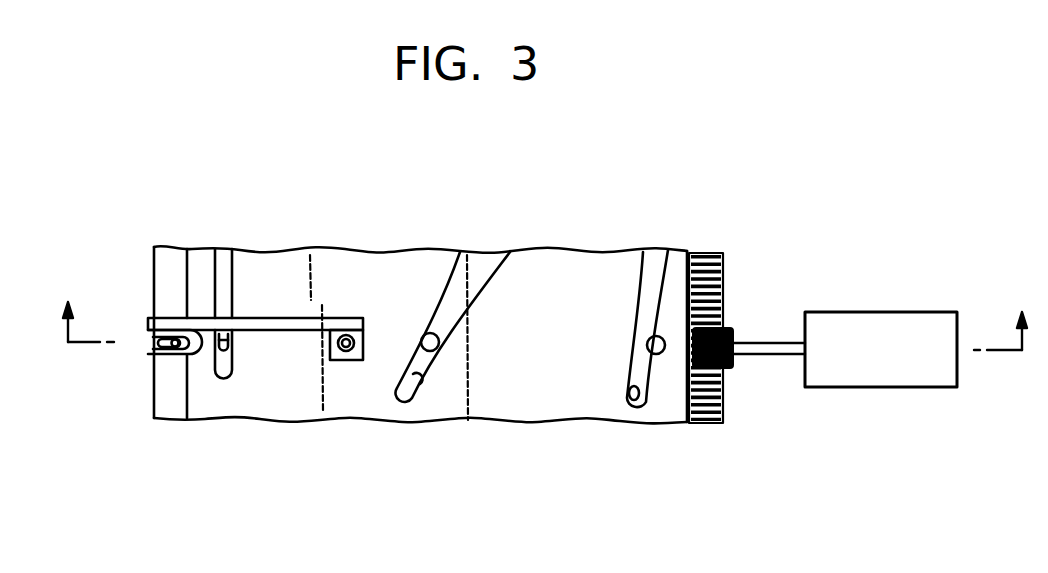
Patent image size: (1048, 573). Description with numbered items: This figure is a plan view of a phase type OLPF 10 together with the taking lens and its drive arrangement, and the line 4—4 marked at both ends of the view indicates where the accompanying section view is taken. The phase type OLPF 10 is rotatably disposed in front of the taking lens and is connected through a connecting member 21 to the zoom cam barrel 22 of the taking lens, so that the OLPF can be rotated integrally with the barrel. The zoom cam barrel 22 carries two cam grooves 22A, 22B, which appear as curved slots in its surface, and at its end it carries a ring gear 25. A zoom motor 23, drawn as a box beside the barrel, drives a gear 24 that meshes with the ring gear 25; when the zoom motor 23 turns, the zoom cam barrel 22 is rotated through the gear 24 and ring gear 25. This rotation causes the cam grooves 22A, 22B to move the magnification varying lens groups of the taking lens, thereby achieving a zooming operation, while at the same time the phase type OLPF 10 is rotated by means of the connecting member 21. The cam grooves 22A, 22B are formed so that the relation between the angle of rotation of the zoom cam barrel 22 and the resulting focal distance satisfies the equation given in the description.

The phase type OLPF 10 is at (168, 420).
The connecting member 21 is at (265, 318).
The zoom cam barrel 22 is at (425, 268).
The cam groove 22A is at (418, 387).
The cam groove 22B is at (628, 406).
The zoom motor 23 is at (860, 312).
The gear 24 is at (735, 328).
The ring gear 25 is at (723, 402).
The section line 4— 4 is at (544, 311).